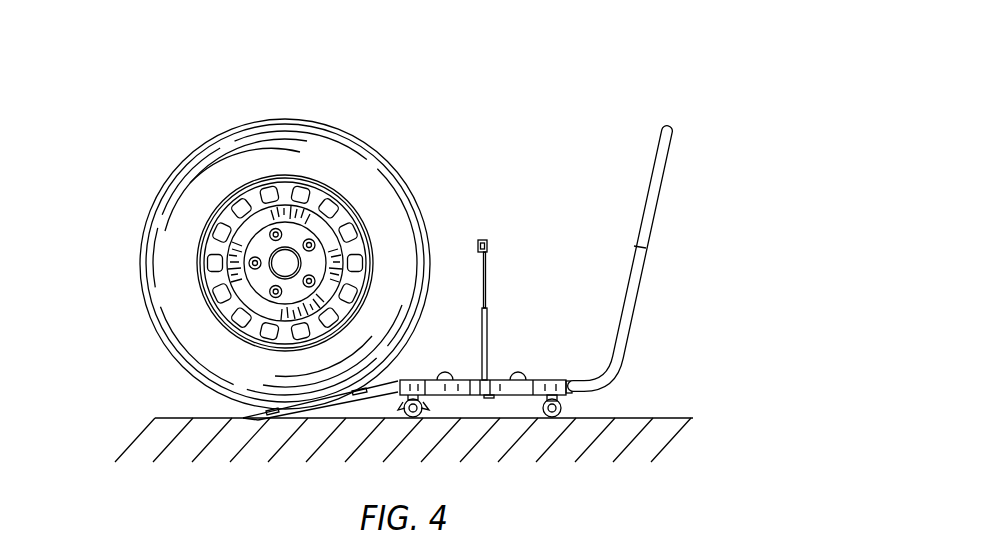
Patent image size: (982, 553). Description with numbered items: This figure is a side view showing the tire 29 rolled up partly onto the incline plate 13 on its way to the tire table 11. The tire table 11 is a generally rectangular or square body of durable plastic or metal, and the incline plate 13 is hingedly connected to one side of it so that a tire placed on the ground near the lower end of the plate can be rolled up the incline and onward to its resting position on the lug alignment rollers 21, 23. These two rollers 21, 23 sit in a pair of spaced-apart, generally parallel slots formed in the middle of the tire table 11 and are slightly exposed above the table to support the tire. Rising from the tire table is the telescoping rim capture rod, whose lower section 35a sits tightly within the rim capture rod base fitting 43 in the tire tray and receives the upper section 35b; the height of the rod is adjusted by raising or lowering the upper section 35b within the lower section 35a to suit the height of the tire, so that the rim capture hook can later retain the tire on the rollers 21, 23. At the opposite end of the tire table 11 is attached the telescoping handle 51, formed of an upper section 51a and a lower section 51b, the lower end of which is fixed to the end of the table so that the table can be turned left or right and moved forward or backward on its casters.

The tire table 11 is at (487, 380).
The incline plate 13 is at (243, 416).
The lug alignment roller 21 is at (461, 372).
The lug alignment roller 23 is at (530, 375).
The tire 29 is at (190, 183).
The lower section of telescoping rim capture rod 35a is at (488, 322).
The upper section of telescoping rim capture rod 35b is at (487, 262).
The rim capture rod base fitting 43 is at (489, 398).
The telescoping handle 51 is at (664, 258).
The upper section of telescoping handle 51a is at (660, 192).
The lower section of telescoping handle 51b is at (625, 357).